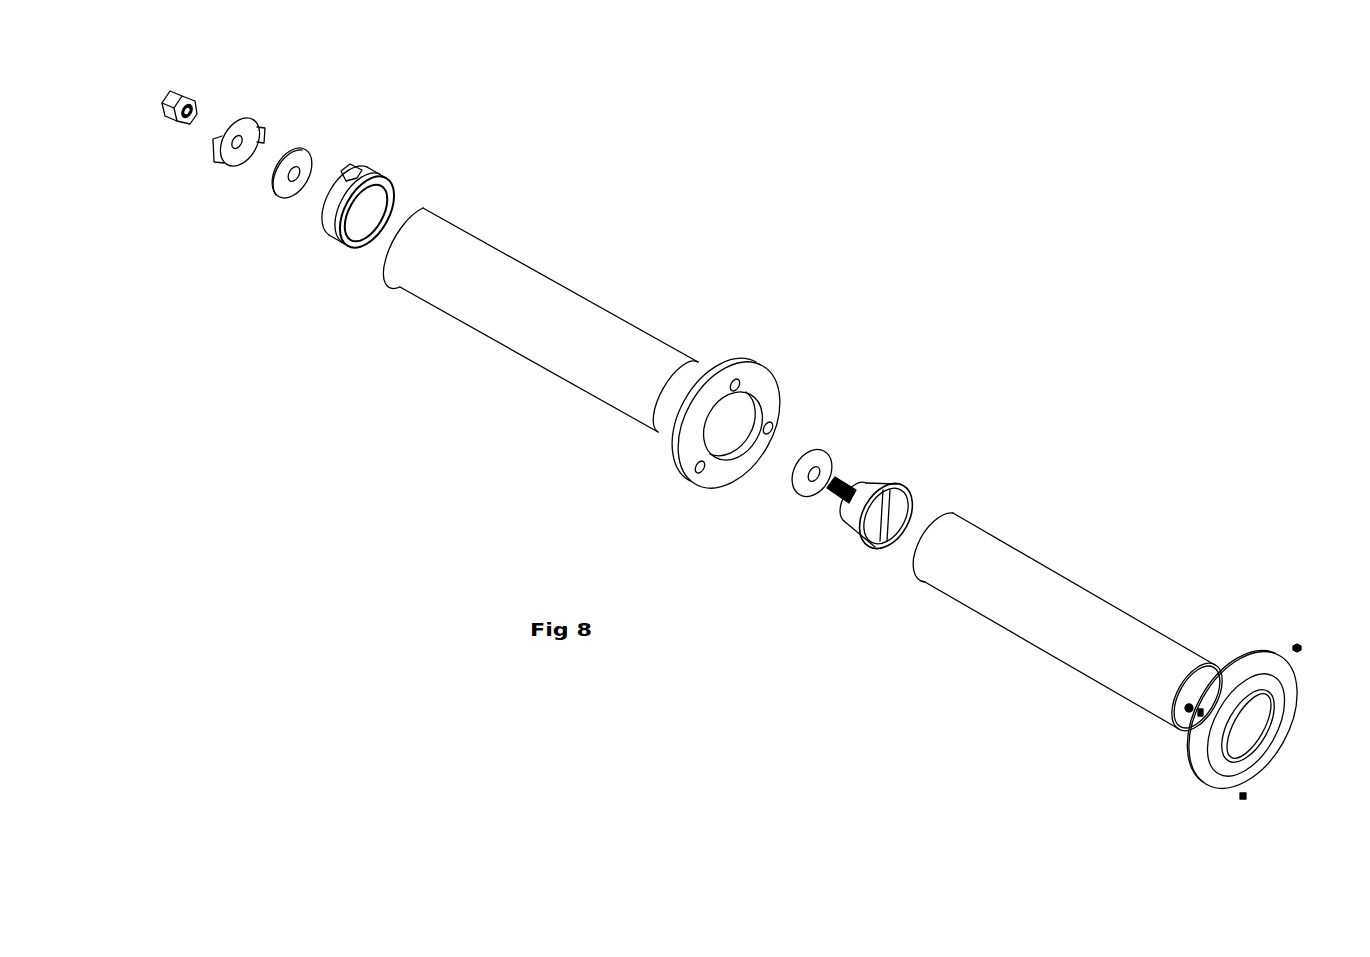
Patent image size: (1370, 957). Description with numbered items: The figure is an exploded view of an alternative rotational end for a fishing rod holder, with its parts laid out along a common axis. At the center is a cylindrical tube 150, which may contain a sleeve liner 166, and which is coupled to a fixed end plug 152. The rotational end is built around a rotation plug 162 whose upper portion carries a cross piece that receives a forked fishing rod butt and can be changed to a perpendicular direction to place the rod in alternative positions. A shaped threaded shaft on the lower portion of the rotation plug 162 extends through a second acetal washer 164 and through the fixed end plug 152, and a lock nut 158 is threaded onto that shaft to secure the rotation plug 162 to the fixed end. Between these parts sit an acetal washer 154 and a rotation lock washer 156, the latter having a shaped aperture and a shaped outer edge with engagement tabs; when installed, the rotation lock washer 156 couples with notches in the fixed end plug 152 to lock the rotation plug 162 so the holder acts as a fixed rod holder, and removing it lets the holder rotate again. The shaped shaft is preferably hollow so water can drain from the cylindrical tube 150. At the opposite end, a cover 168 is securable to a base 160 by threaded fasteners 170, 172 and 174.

The cylindrical tube 150 is at (565, 307).
The fixed end plug 152 is at (373, 182).
The acetal washer 154 is at (302, 158).
The rotation lock washer 156 is at (252, 128).
The lock nut 158 is at (180, 98).
The base 160 is at (765, 383).
The rotation plug 162 is at (877, 485).
The second acetal washer 164 is at (820, 458).
The sleeve liner 166 is at (1057, 597).
The cover 168 is at (1243, 670).
The threaded fastener 170 is at (1300, 643).
The threaded fastener 172 is at (1243, 800).
The threaded fastener 174 is at (1185, 712).